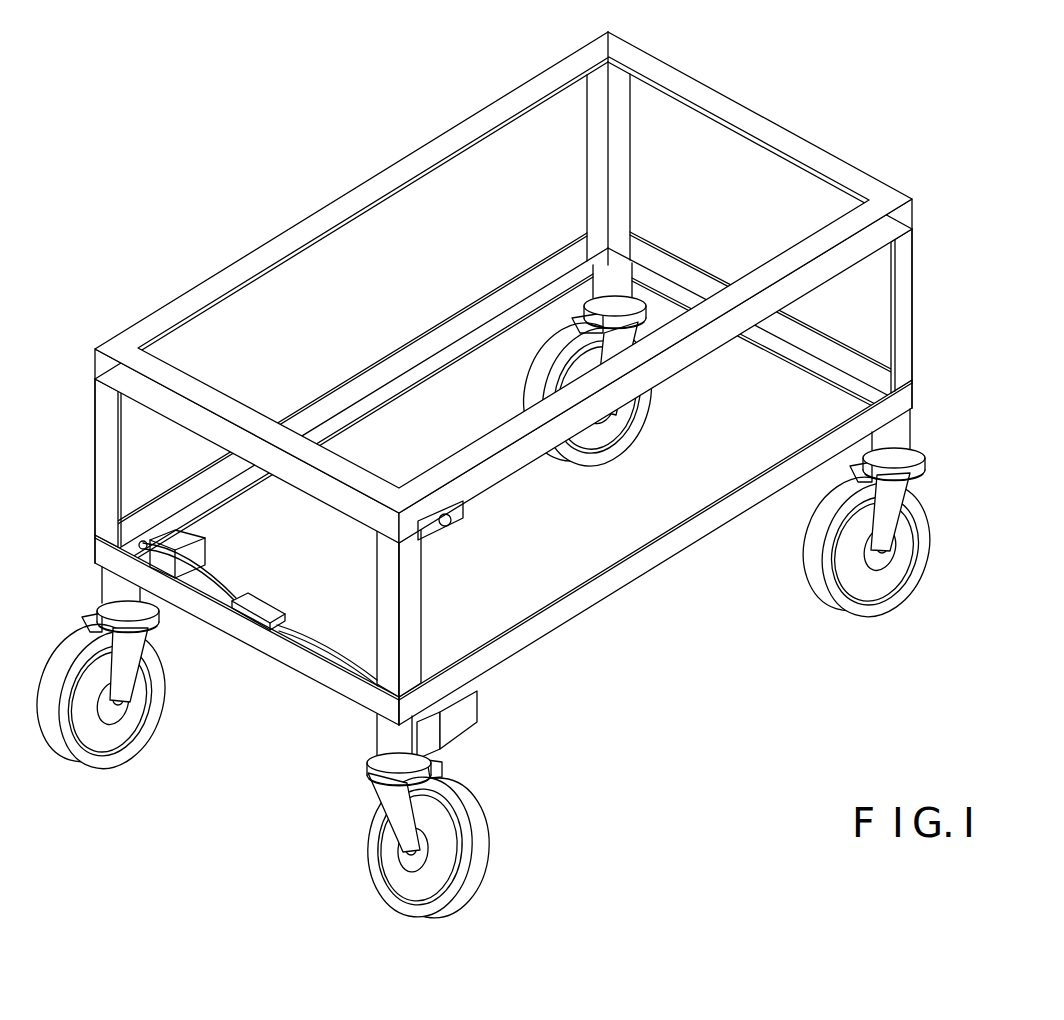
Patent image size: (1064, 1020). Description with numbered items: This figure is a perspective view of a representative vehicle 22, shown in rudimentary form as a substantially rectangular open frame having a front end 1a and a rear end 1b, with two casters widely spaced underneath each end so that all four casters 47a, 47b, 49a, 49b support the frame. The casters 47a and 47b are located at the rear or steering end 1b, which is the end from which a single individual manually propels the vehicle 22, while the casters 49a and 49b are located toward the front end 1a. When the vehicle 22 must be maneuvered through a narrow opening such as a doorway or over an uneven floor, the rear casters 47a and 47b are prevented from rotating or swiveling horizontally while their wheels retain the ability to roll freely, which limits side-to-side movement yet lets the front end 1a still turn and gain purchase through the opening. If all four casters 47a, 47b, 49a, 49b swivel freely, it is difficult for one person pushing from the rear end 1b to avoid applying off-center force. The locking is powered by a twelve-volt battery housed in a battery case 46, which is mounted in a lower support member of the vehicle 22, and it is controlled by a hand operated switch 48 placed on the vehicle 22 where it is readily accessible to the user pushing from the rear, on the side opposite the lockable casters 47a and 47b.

The front end 1a is at (718, 92).
The rear end 1b is at (313, 497).
The vehicle 22 is at (924, 248).
The battery case 46 is at (268, 612).
The caster 47a is at (473, 815).
The caster 47b is at (148, 736).
The hand operated switch 48 is at (465, 517).
The caster 49a is at (932, 540).
The caster 49b is at (637, 427).